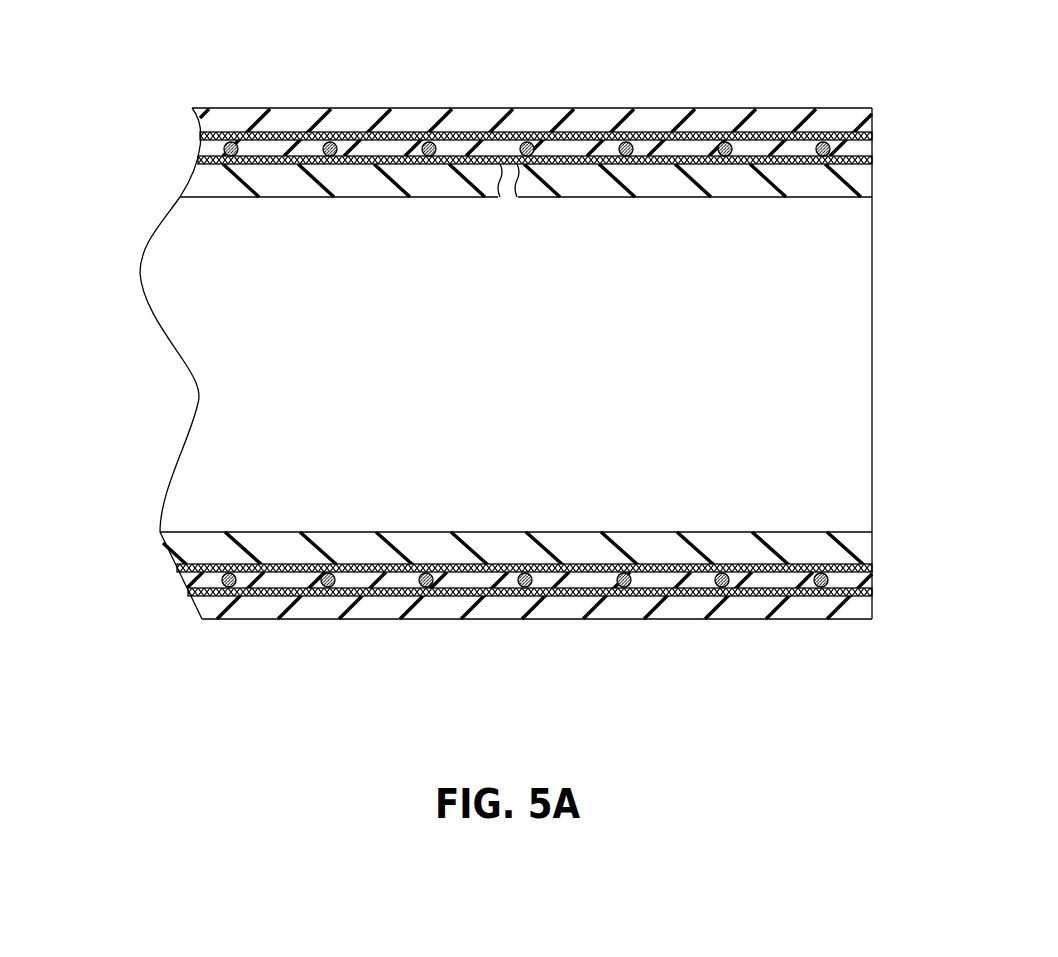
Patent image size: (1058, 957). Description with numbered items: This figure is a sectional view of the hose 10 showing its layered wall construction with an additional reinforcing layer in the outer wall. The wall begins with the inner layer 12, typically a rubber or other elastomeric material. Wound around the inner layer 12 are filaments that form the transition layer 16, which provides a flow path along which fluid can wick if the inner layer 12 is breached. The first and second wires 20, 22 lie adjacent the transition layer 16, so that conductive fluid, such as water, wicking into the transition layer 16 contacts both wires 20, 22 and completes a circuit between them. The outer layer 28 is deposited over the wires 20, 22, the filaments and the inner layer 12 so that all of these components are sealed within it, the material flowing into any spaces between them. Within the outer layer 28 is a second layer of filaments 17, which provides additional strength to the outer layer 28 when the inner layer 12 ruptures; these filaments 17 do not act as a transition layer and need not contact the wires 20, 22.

The hose 10 is at (140, 93).
The inner layer 12 is at (822, 188).
The transition layer 16 is at (553, 156).
The second layer of filaments 17 is at (350, 130).
The first wire 20 is at (718, 141).
The second wire 22 is at (825, 141).
The outer layer 28 is at (230, 126).